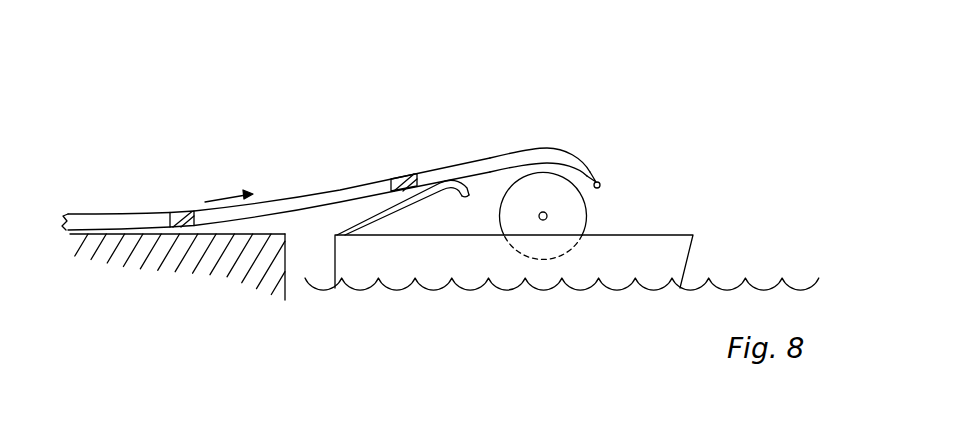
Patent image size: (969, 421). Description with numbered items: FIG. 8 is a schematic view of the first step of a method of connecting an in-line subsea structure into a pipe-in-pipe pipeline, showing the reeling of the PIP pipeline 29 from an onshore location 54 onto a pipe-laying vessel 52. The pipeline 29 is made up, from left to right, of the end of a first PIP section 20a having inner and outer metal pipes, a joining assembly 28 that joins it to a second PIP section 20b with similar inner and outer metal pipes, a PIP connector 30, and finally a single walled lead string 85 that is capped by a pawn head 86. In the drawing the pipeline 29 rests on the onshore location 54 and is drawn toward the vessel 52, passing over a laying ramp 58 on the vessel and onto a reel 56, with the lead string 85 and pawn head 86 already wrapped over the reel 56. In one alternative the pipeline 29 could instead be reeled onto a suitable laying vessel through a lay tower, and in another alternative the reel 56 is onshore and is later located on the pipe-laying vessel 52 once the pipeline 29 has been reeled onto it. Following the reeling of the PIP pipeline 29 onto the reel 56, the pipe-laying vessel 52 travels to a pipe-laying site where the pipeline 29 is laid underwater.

The PIP pipeline 29 is at (142, 111).
The first PIP section 20a is at (80, 213).
The joining assembly 28 is at (178, 212).
The second PIP section 20b is at (298, 196).
The PIP connector 30 is at (412, 177).
The single walled lead string 85 is at (530, 150).
The pawn head 86 is at (602, 182).
The laying ramp 58 is at (400, 205).
The pipe-laying vessel 52 is at (681, 233).
The reel 56 is at (563, 253).
The onshore location 54 is at (222, 307).